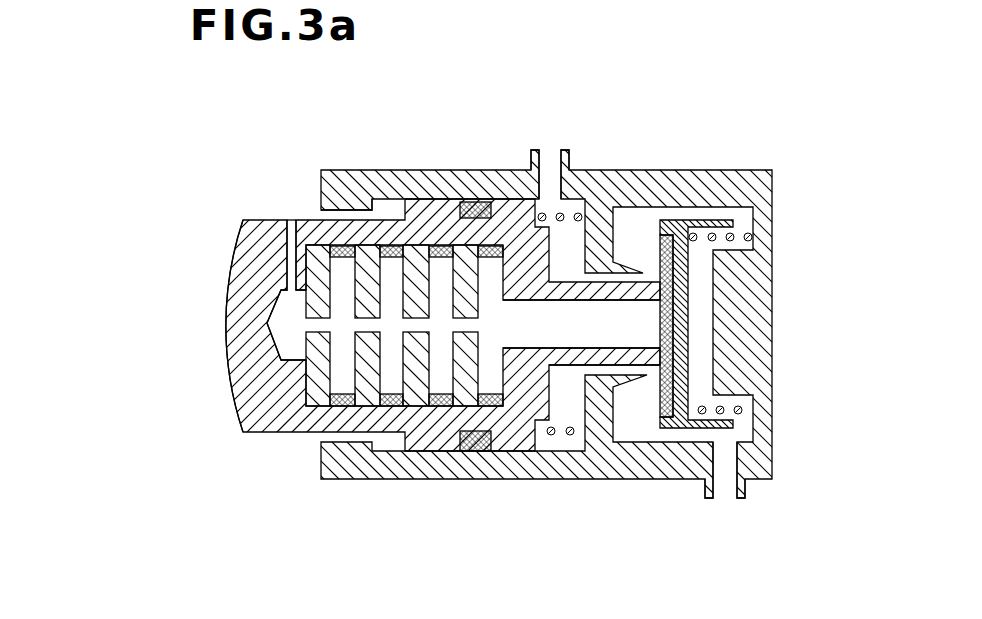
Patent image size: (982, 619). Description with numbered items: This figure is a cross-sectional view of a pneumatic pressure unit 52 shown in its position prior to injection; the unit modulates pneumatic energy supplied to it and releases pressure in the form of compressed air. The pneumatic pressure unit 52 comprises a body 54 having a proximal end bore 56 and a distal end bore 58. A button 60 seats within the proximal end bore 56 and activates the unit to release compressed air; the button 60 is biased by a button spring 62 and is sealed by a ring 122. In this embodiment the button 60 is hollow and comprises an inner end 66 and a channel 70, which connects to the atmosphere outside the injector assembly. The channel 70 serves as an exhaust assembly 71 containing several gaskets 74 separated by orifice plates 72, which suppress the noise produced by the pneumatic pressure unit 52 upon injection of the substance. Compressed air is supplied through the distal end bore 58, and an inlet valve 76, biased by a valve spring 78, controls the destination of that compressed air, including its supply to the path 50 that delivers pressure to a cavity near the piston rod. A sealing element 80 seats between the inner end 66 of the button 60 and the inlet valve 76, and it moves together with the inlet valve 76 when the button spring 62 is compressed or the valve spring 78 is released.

The path 50 is at (550, 158).
The pneumatic pressure unit 52 is at (321, 493).
The body 54 is at (378, 185).
The proximal end bore 56 is at (312, 213).
The distal end bore 58 is at (725, 463).
The button 60 is at (254, 348).
The button spring 62 is at (548, 437).
The inner end 66 is at (660, 365).
The channel 70 is at (517, 327).
The exhaust assembly 71 is at (220, 272).
The orifice plates 72 is at (483, 407).
The gaskets 74 is at (345, 246).
The inlet valve 76 is at (680, 418).
The valve spring 78 is at (732, 233).
The sealing element 80 is at (673, 337).
The ring 122 is at (473, 452).